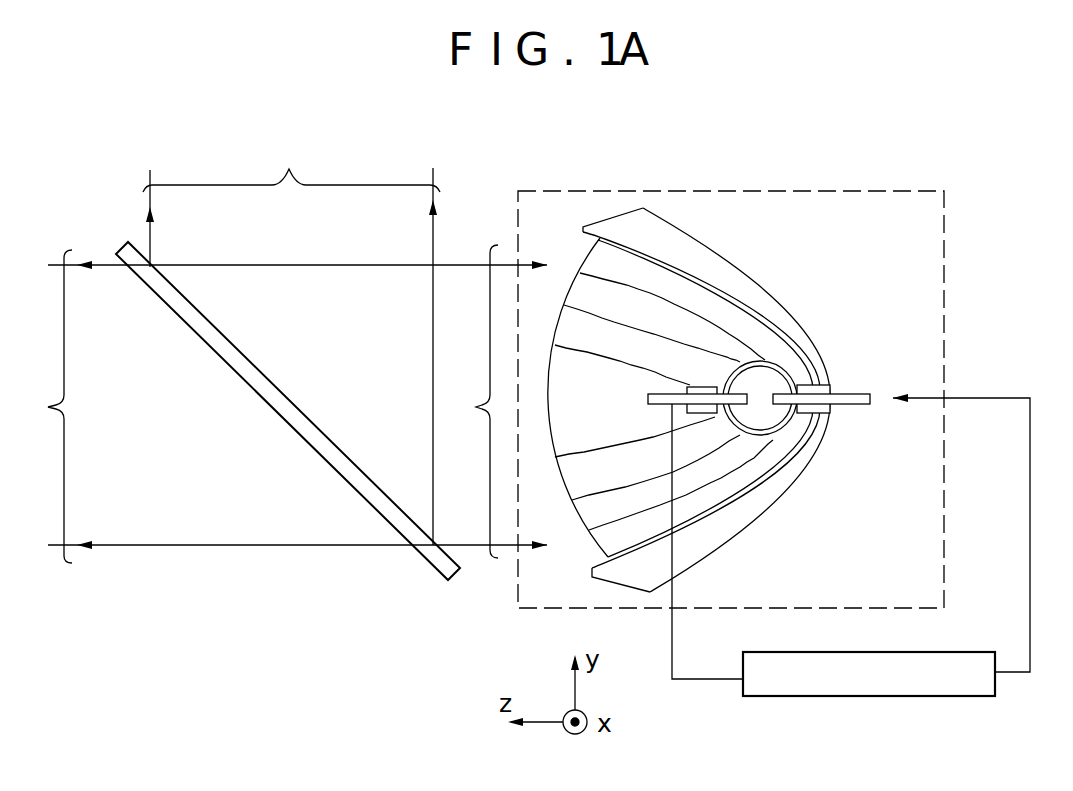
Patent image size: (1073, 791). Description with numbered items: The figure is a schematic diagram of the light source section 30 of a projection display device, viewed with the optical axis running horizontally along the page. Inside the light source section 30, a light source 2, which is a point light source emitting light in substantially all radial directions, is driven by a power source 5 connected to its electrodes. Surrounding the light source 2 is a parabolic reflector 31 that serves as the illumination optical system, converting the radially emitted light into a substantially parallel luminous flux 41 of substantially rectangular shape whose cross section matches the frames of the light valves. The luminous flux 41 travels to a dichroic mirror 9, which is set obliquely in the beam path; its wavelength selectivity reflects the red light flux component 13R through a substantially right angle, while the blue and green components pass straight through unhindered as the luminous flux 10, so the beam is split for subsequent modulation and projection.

The light source 2 is at (830, 385).
The power source 5 is at (945, 697).
The dichroic mirror 9 is at (430, 565).
The luminous flux 10 is at (277, 406).
The red light flux component 13R is at (291, 335).
The light source section 30 is at (856, 191).
The parabolic reflector 31 is at (768, 290).
The luminous flux 41 is at (469, 401).